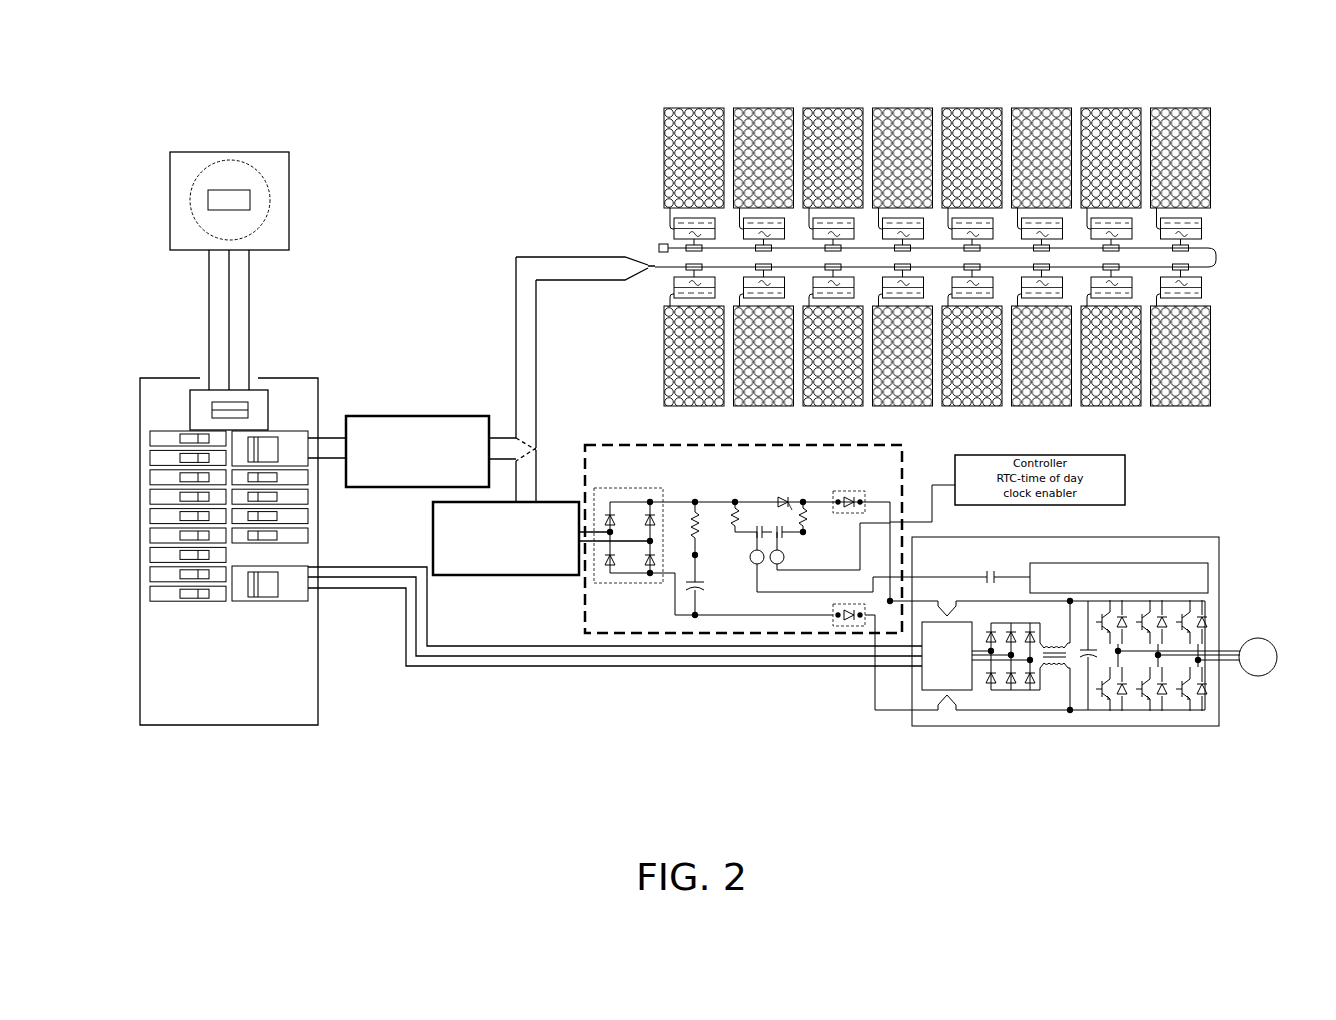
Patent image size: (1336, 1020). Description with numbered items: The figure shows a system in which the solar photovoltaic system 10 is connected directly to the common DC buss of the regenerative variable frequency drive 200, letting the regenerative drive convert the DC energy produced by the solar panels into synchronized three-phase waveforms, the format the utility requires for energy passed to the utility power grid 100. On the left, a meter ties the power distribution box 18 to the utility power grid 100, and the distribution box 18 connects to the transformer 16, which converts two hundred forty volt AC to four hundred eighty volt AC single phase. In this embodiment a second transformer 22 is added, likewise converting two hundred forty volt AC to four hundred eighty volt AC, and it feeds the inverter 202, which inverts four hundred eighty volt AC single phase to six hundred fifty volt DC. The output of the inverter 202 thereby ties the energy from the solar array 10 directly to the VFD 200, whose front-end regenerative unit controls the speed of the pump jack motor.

The solar photovoltaic system 10 is at (645, 128).
The utility power grid 100 is at (290, 150).
The transformer 16 is at (417, 438).
The power distribution box 18 is at (240, 702).
The second transformer 22 is at (506, 553).
The inverter 202 is at (772, 482).
The regenerative variable frequency drive 200 is at (1076, 618).